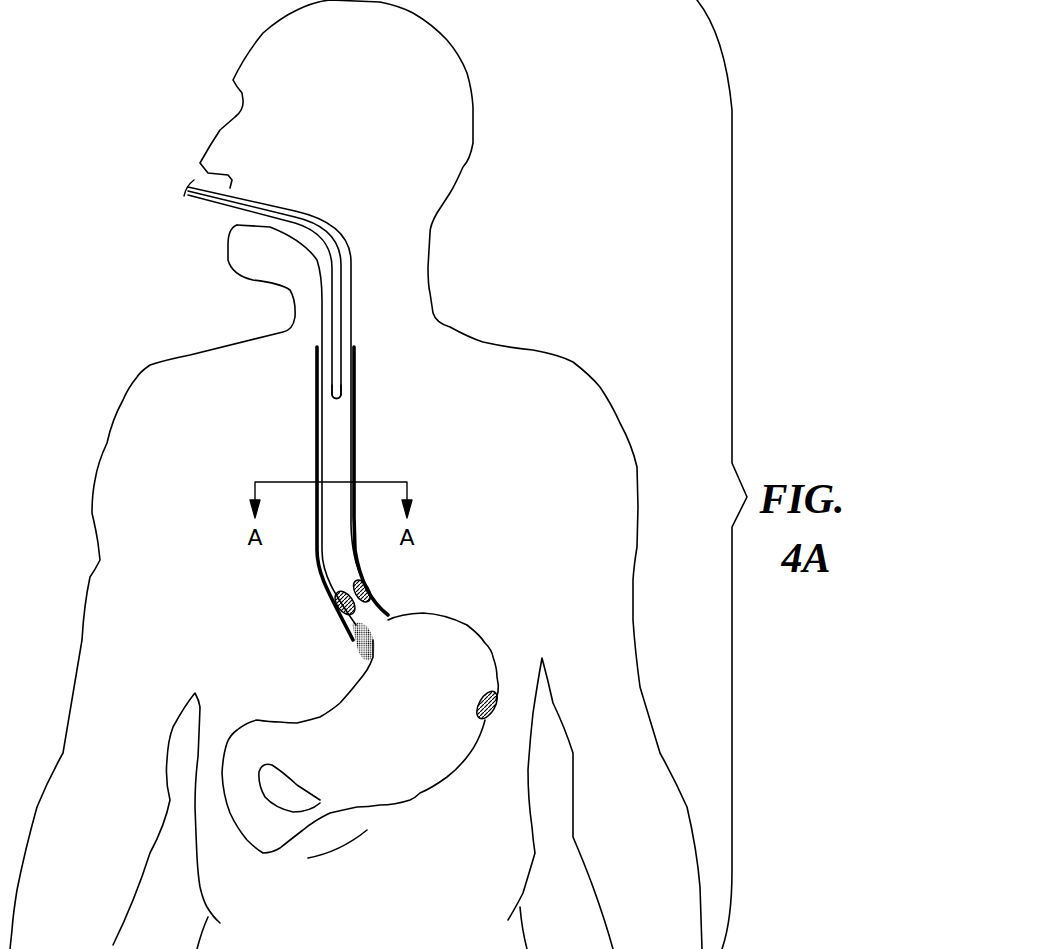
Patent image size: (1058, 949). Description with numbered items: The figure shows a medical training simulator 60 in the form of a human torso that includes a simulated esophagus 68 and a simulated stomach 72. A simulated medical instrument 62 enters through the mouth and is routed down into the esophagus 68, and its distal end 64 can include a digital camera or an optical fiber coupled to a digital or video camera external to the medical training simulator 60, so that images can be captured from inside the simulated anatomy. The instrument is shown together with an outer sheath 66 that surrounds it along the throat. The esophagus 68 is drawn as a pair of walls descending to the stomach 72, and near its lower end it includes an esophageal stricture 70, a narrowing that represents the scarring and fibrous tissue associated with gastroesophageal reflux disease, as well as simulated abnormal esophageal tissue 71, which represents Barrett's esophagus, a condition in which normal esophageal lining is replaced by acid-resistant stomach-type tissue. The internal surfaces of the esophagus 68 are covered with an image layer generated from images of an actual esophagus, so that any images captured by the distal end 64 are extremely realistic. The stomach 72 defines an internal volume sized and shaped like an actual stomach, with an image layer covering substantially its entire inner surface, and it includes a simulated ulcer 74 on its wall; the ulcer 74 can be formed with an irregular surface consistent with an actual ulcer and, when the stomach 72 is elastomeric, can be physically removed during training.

The medical training simulator 60 is at (534, 76).
The simulated medical instrument 62 is at (213, 197).
The distal end 64 is at (337, 390).
The outer sheath 66 is at (353, 267).
The simulated esophagus 68 is at (313, 445).
The esophageal stricture 70 is at (340, 611).
The simulated abnormal esophageal tissue 71 is at (362, 648).
The simulated stomach 72 is at (433, 787).
The simulated ulcer 74 is at (497, 693).